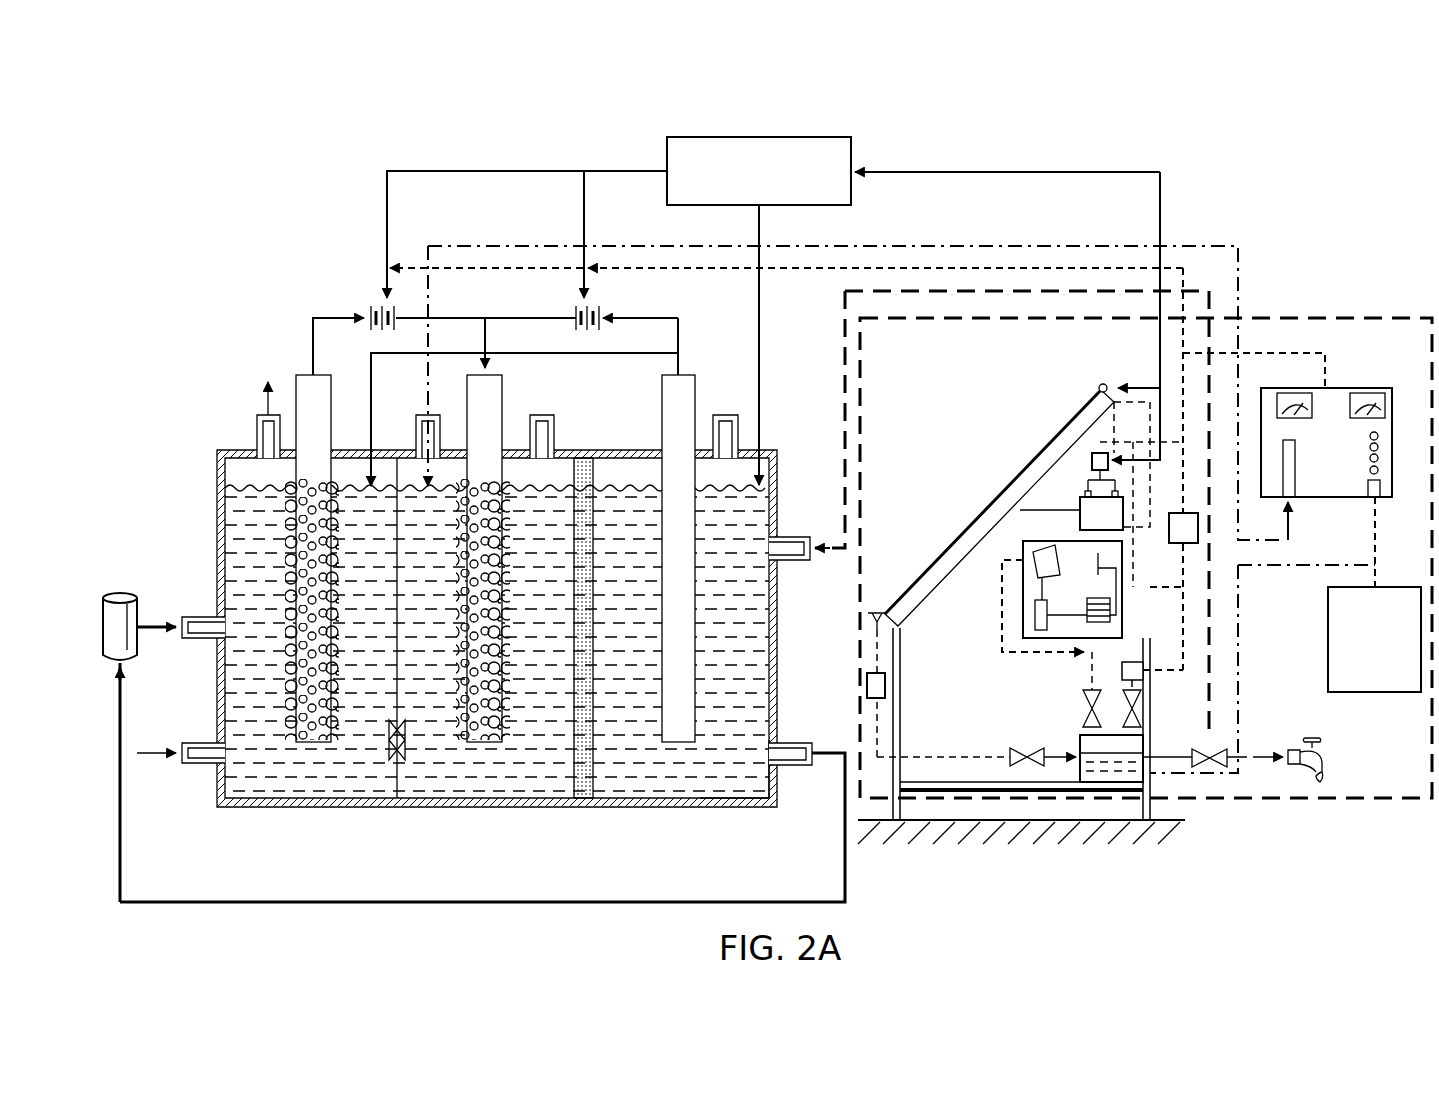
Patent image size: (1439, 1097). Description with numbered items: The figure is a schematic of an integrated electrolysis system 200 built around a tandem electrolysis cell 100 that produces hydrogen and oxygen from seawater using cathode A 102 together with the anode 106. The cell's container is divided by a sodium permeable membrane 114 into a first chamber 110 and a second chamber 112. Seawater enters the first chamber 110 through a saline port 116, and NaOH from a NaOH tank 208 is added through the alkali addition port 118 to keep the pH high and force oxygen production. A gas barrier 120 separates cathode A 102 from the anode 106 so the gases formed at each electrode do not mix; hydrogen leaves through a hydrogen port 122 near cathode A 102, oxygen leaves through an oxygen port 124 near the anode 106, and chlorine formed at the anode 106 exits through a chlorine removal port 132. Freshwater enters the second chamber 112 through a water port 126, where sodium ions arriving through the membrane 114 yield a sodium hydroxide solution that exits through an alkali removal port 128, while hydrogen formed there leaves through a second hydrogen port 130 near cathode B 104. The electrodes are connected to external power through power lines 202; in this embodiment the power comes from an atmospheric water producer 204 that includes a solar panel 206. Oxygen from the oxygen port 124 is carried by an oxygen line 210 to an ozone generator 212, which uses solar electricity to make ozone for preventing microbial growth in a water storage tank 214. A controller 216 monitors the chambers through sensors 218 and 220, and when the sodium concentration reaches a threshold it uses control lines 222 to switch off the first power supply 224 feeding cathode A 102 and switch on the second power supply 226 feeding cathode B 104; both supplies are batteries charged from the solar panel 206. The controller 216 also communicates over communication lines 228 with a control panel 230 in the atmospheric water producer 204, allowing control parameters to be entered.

The tandem electrolysis cell 100 is at (206, 283).
The cathode A 102 is at (310, 745).
The cathode B 104 is at (680, 745).
The anode 106 is at (480, 745).
The first chamber 110 is at (240, 810).
The second chamber 112 is at (750, 805).
The sodium permeable membrane 114 is at (590, 800).
The saline port 116 is at (195, 765).
The alkali addition port 118 is at (195, 640).
The gas barrier 120 is at (397, 765).
The hydrogen port 122 is at (257, 430).
The oxygen port 124 is at (443, 436).
The water port 126 is at (795, 565).
The alkali removal port 128 is at (795, 768).
The second hydrogen port 130 is at (738, 425).
The chlorine removal port 132 is at (554, 430).
The integrated electrolysis system 200 is at (1306, 94).
The power lines 202 is at (788, 270).
The atmospheric water producer 204 is at (1366, 804).
The solar panel 206 is at (985, 515).
The NaOH tank 208 is at (125, 593).
The oxygen line 210 is at (1005, 246).
The ozone generator 212 is at (1360, 388).
The water storage tank 214 is at (1080, 740).
The controller 216 is at (735, 137).
The sensors 218 is at (362, 485).
The sensors 220 is at (766, 490).
The control lines 222 is at (480, 171).
The first power supply 224 is at (368, 312).
The second power supply 226 is at (574, 312).
The communication lines 228 is at (1055, 172).
The control panel 230 is at (1090, 455).